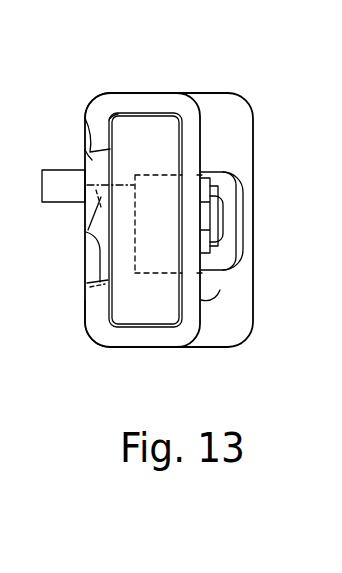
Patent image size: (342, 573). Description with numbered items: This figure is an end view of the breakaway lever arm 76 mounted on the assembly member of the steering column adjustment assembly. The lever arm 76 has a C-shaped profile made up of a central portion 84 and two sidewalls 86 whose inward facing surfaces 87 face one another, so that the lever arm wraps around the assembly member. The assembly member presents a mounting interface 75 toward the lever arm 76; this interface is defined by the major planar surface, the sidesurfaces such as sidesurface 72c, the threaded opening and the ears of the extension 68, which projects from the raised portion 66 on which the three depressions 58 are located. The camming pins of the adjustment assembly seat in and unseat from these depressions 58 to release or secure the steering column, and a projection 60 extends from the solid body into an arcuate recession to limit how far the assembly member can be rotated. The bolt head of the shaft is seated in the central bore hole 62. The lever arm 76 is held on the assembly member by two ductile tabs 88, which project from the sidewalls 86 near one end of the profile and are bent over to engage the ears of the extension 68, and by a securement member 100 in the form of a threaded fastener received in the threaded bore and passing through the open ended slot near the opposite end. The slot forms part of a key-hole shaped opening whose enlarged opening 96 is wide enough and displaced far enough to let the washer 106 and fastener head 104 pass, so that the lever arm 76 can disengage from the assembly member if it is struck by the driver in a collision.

The depressions 58 is at (86, 232).
The projection 60 is at (58, 173).
The central bore hole 62 is at (118, 250).
The raised portion 66 is at (82, 151).
The extension 68 is at (155, 137).
The sidesurface 72c is at (127, 120).
The mounting interface 75 is at (77, 345).
The breakaway lever arm 76 is at (233, 123).
The central portion 84 is at (203, 303).
The sidewalls 86 is at (140, 98).
The inward facing surfaces 87 is at (190, 130).
The ductile projecting tabs 88 is at (92, 135).
The enlarged opening 96 is at (220, 258).
The securement member 100 is at (217, 212).
The fastener head 104 is at (215, 228).
The washer 106 is at (207, 188).